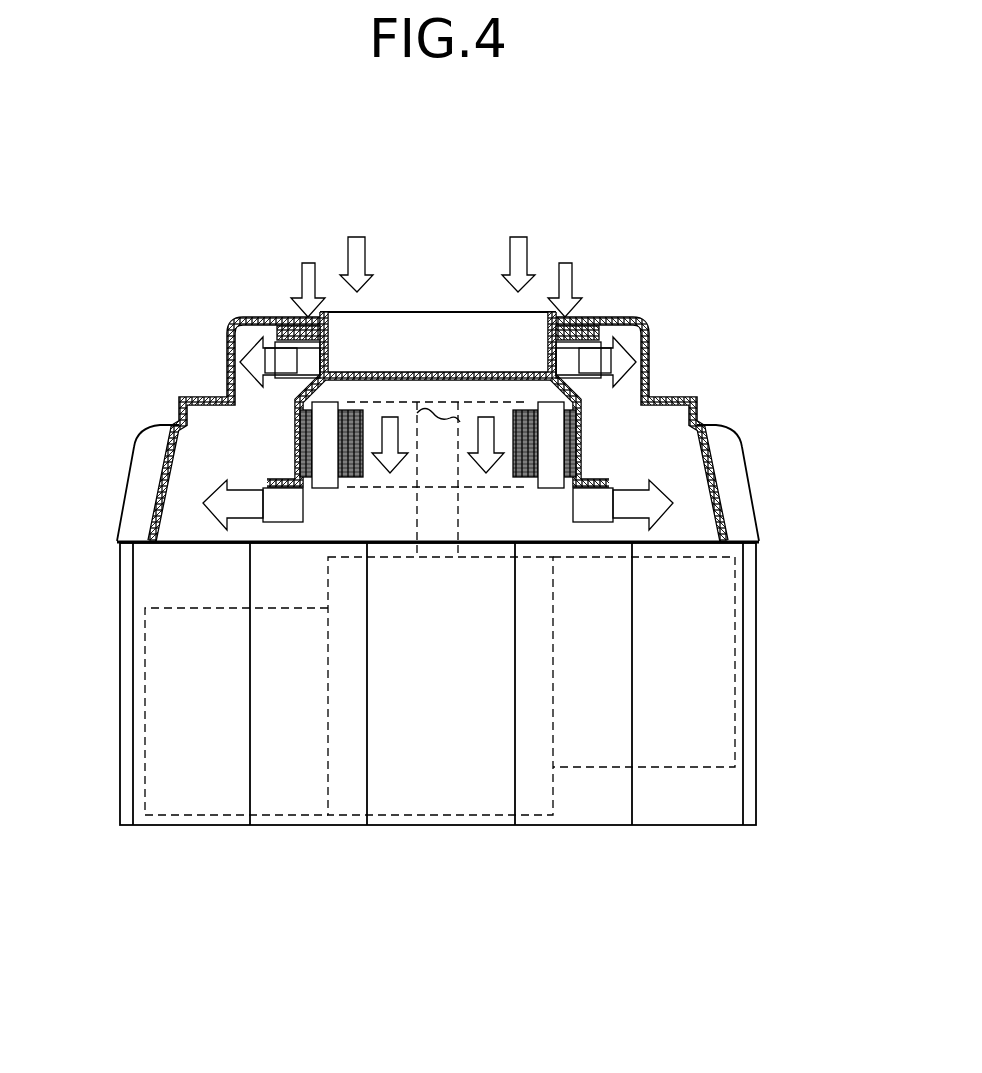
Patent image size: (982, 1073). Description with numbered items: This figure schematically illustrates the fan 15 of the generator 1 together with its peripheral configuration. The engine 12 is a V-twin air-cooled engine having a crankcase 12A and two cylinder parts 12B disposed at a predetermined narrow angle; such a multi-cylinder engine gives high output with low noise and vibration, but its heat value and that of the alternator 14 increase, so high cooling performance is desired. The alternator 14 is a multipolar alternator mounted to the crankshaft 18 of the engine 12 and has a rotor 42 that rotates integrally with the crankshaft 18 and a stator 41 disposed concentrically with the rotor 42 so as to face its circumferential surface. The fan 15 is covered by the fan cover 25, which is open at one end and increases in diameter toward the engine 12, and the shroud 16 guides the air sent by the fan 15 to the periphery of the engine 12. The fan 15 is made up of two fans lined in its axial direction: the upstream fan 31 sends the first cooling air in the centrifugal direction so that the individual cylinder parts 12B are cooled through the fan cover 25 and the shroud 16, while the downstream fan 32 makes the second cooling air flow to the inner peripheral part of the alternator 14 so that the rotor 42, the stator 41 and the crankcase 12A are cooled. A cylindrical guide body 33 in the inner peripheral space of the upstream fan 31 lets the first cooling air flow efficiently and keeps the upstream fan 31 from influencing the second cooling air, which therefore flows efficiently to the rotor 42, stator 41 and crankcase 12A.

The generator 1 is at (440, 121).
The engine 12 is at (142, 660).
The crankcase 12A is at (537, 817).
The cylinder parts 12B is at (182, 817).
The alternator 14 is at (597, 230).
The fan 15 is at (125, 298).
The shroud 16 is at (119, 567).
The crankshaft 18 is at (418, 408).
The fan cover 25 is at (128, 480).
The upstream fan 31 is at (282, 336).
The downstream fan 32 is at (262, 487).
The cylindrical guide body 33 is at (477, 311).
The stator 41 is at (562, 378).
The rotor 42 is at (590, 428).